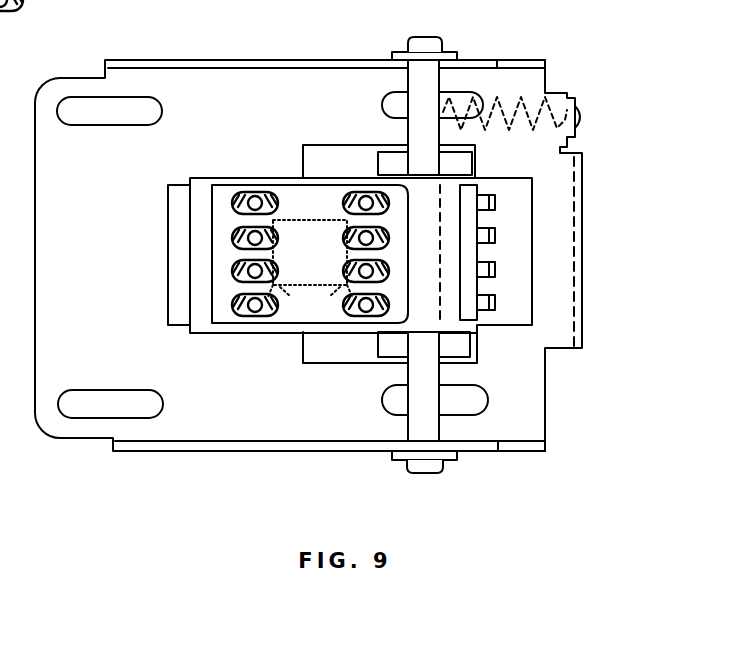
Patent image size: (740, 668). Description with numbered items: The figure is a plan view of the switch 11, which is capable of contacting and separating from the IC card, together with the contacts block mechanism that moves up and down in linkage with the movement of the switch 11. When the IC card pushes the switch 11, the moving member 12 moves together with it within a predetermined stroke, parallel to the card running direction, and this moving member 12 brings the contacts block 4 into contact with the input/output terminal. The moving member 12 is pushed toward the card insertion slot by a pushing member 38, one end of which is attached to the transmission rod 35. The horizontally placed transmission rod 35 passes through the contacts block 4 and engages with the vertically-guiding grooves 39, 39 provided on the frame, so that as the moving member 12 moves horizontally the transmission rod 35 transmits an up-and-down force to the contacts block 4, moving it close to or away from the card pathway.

The moving member 12 is at (137, 82).
The contacts block 4 is at (285, 198).
The transmission rod 35 is at (423, 93).
The pushing member 38 is at (503, 100).
The vertically-guiding grooves 39 is at (475, 158).
The switch 11 is at (575, 348).